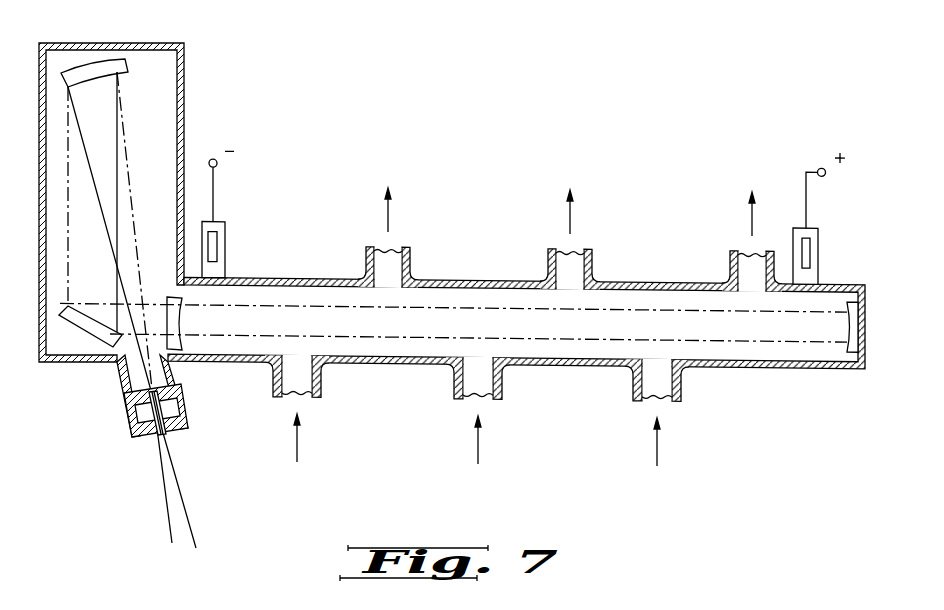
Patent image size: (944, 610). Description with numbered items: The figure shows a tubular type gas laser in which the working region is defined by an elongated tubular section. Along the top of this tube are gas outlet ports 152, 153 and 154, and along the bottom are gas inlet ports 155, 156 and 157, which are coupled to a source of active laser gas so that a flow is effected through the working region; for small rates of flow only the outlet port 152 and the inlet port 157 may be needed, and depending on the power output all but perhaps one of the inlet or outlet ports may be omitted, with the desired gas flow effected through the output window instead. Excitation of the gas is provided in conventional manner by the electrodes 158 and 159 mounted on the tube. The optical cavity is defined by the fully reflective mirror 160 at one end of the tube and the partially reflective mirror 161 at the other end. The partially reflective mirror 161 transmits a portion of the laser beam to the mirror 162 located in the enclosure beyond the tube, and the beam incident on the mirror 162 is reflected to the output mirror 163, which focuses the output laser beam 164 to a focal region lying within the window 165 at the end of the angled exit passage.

The gas outlet port 152 is at (730, 256).
The gas outlet port 153 is at (592, 259).
The gas outlet port 154 is at (410, 256).
The gas inlet port 155 is at (681, 385).
The gas inlet port 156 is at (502, 384).
The gas inlet port 157 is at (321, 384).
The electrode 158 is at (818, 231).
The electrode 159 is at (217, 247).
The fully reflective mirror 160 is at (863, 279).
The partially reflective mirror 161 is at (179, 363).
The mirror 162 is at (61, 318).
The output mirror 163 is at (130, 66).
The output laser beam 164 is at (127, 127).
The window 165 is at (189, 420).